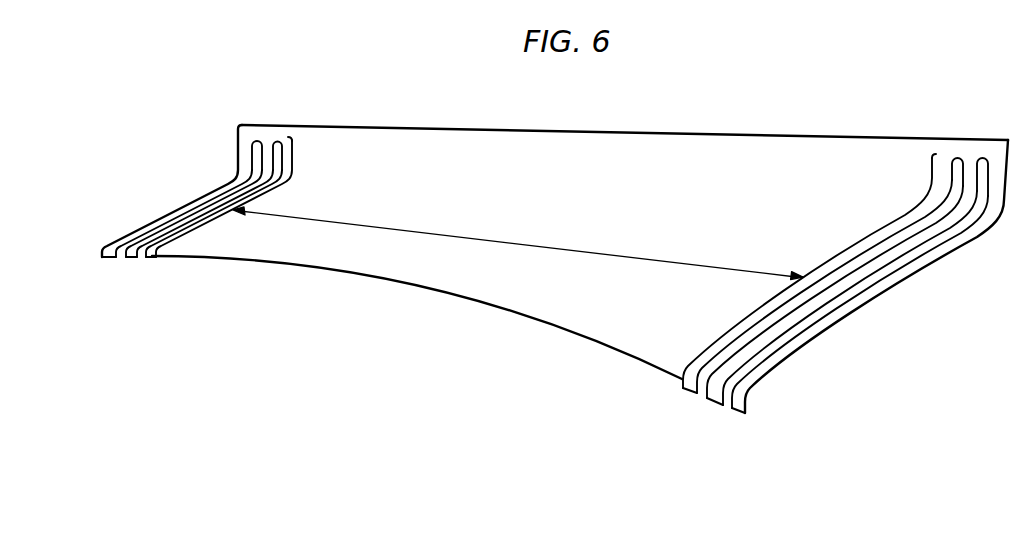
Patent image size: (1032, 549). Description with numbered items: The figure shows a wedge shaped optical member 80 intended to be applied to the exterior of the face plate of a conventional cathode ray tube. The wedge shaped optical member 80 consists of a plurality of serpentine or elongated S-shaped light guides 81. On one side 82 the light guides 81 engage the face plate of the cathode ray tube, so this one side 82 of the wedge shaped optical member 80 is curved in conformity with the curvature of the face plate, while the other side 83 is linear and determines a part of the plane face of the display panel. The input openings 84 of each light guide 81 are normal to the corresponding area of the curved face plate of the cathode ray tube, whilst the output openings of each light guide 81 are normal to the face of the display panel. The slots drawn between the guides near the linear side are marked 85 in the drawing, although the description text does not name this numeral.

The wedge shaped optical member 80 is at (594, 371).
The light guides 81 is at (178, 203).
The one side 82 is at (373, 278).
The other side 83 is at (587, 130).
The input openings 84 is at (154, 260).
The slots 85 is at (971, 160).